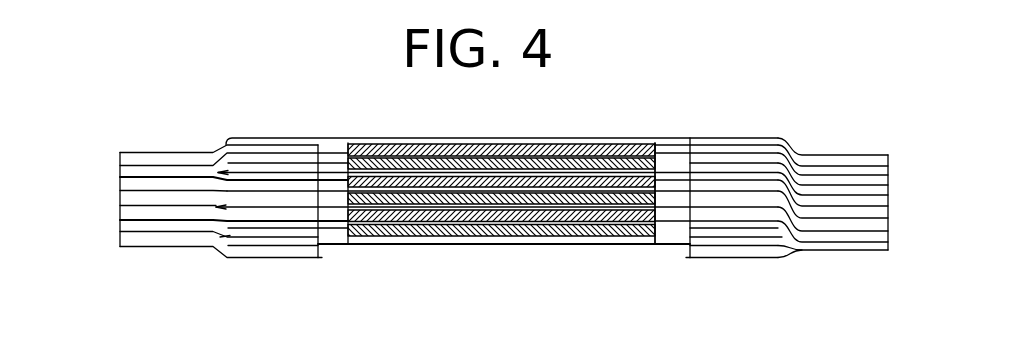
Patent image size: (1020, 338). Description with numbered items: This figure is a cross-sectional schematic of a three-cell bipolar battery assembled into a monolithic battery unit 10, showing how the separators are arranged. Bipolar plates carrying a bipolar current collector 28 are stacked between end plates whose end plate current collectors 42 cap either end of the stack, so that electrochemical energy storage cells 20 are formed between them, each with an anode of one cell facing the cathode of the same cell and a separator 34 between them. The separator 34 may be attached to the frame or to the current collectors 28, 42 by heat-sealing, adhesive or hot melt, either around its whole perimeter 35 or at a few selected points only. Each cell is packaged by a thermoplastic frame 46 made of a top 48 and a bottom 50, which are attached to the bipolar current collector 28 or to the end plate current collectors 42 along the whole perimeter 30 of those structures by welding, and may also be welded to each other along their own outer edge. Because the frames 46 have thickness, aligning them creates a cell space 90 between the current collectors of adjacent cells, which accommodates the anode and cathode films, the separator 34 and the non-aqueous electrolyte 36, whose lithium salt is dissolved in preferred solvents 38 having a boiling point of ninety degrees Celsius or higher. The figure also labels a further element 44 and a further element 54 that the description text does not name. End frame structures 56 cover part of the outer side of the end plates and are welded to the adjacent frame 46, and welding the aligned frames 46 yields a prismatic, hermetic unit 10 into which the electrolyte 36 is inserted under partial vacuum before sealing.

The monolithic battery unit 10 is at (851, 128).
The electrochemical energy storage cell 20 is at (338, 152).
The bipolar current collector 28 is at (800, 180).
The perimeter 30 is at (667, 256).
The separator 34 is at (585, 213).
The perimeter of the separator 35 is at (723, 192).
The non-aqueous electrolyte 36 is at (362, 281).
The solvents 38 is at (554, 281).
The end plate current collectors 42 is at (728, 138).
The insulative body 44 is at (432, 135).
The frame 46 is at (105, 156).
The top 48 is at (125, 170).
The bottom 50 is at (125, 185).
The cable end 54 is at (164, 139).
The end frame structure 56 is at (231, 152).
The cell space 90 is at (348, 233).